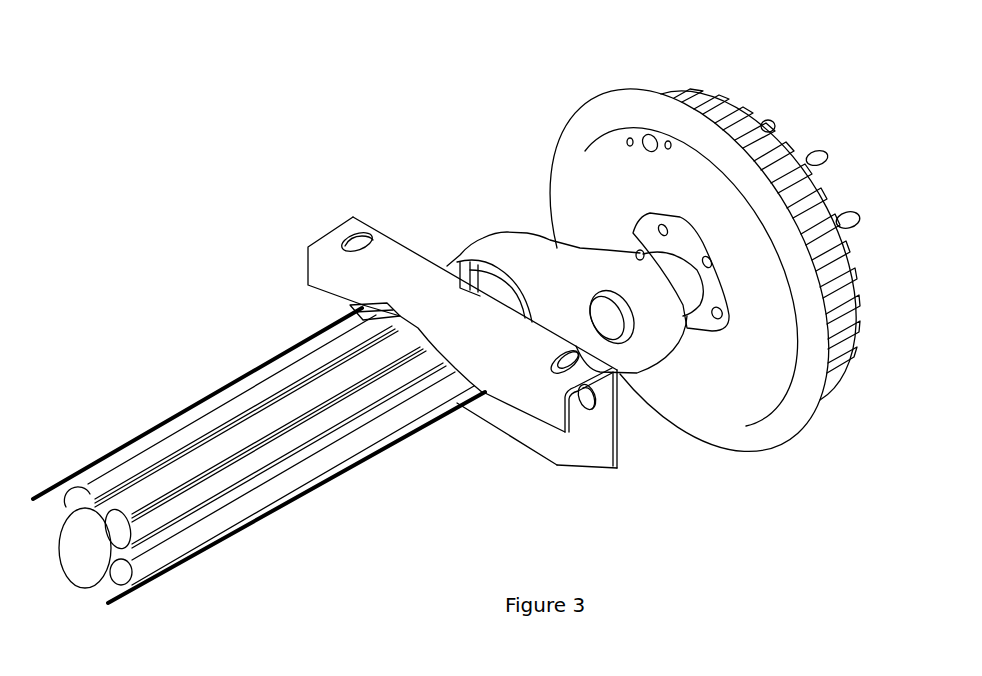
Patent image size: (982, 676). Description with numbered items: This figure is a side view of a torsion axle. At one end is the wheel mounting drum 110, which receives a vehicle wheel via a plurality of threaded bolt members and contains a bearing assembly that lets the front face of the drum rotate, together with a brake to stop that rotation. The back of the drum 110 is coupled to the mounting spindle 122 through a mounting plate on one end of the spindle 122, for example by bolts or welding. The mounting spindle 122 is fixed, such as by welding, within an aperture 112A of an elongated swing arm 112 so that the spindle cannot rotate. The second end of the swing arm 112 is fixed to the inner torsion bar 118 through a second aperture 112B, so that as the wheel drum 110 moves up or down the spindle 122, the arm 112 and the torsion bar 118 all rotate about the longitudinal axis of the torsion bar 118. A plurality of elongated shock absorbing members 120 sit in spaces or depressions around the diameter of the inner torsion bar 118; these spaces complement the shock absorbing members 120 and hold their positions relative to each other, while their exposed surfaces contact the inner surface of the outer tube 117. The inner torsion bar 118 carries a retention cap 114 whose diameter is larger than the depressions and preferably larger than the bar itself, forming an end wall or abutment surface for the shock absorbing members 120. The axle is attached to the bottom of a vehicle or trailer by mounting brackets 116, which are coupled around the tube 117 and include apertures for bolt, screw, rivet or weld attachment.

The wheel mounting drum 110 is at (715, 92).
The swing arm 112 is at (541, 307).
The aperture 112A is at (624, 335).
The second aperture 112B is at (497, 267).
The retention cap 114 is at (80, 555).
The mounting bracket 116 is at (405, 262).
The outer tube 117 is at (210, 390).
The inner torsion bar 118 is at (376, 405).
The shock absorbing members 120 is at (332, 343).
The mounting spindle 122 is at (682, 307).